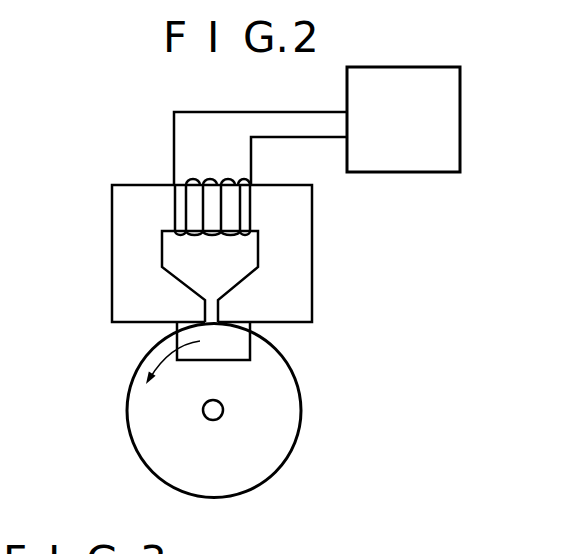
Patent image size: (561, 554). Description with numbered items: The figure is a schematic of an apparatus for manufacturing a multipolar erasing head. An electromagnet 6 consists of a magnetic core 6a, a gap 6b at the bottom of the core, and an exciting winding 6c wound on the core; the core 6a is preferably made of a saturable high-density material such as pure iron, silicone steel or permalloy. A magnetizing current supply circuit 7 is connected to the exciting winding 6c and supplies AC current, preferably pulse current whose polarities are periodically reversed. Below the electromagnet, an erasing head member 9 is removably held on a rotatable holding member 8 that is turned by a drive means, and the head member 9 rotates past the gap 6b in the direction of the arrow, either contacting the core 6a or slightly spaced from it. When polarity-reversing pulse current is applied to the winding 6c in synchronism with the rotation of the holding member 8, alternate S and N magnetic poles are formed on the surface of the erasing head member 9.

The electromagnet 6 is at (201, 250).
The magnetic core 6a is at (327, 246).
The gap 6b is at (219, 307).
The exciting winding 6c is at (243, 201).
The magnetizing current supply circuit 7 is at (410, 172).
The holding member 8 is at (287, 423).
The erasing head member 9 is at (251, 341).